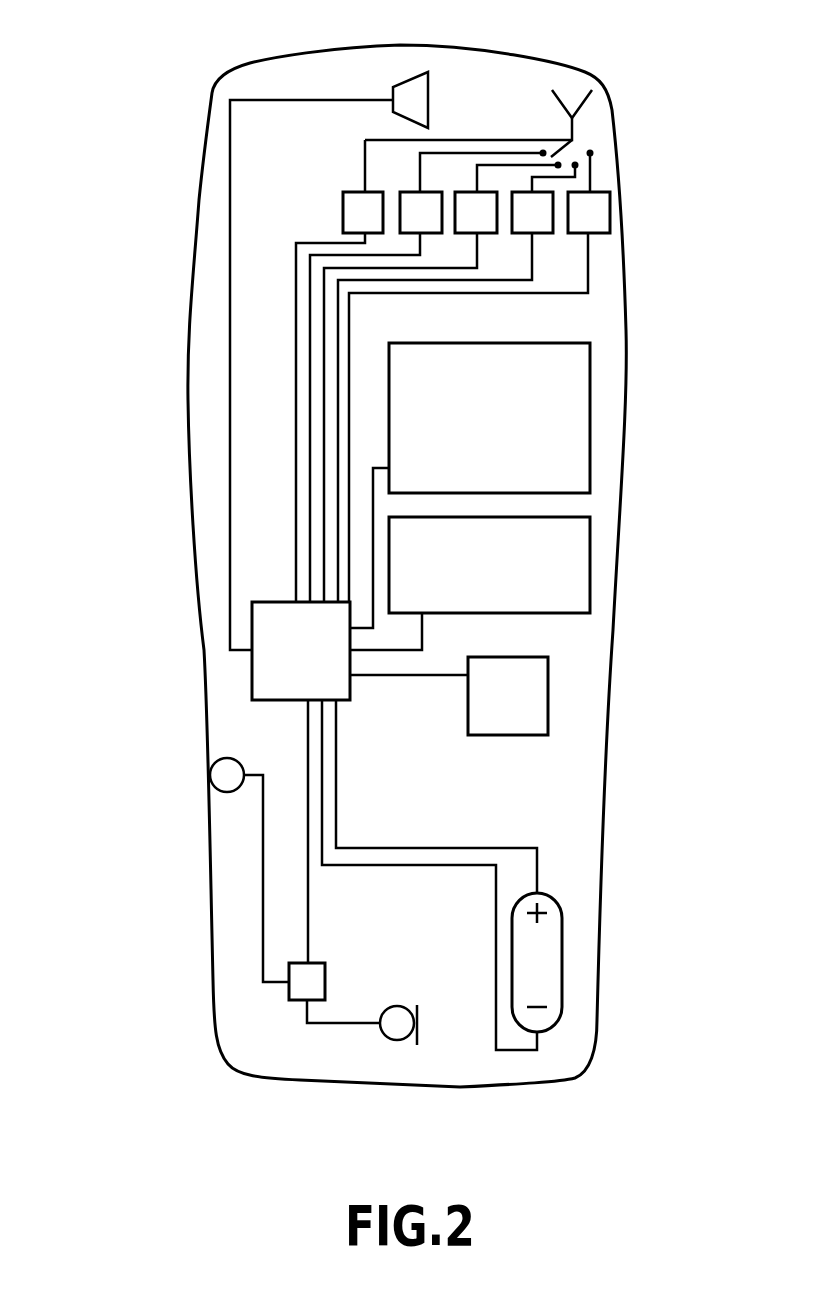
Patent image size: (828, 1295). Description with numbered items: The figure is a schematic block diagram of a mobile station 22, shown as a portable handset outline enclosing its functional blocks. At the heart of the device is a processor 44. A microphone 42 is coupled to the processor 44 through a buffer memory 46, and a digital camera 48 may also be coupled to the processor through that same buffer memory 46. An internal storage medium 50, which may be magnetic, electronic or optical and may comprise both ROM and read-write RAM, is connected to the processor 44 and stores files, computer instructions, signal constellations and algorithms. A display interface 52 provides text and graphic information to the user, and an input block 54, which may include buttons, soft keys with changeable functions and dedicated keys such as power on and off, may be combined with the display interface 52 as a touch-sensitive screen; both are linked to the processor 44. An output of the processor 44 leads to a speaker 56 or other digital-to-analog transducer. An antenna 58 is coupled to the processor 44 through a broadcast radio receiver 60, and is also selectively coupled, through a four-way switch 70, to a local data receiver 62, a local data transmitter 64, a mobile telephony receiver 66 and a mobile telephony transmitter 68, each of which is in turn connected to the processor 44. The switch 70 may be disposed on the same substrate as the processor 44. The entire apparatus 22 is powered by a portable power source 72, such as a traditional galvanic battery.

The mobile station 22 is at (142, 1002).
The microphone 42 is at (398, 1023).
The processor 44 is at (272, 678).
The buffer memory 46 is at (306, 987).
The digital camera 48 is at (227, 775).
The internal storage medium 50 is at (533, 713).
The display interface 52 is at (578, 450).
The input block 54 is at (578, 573).
The speaker 56 is at (415, 92).
The antenna 58 is at (590, 97).
The broadcast radio receiver (R1) 60 is at (362, 192).
The local data receiver (R2) 62 is at (428, 192).
The local data transmitter (T2) 64 is at (483, 192).
The mobile telephony receiver (R3) 66 is at (540, 236).
The mobile telephony transmitter (T3) 68 is at (610, 208).
The 4-way switch 70 is at (583, 143).
The portable power source 72 is at (562, 983).